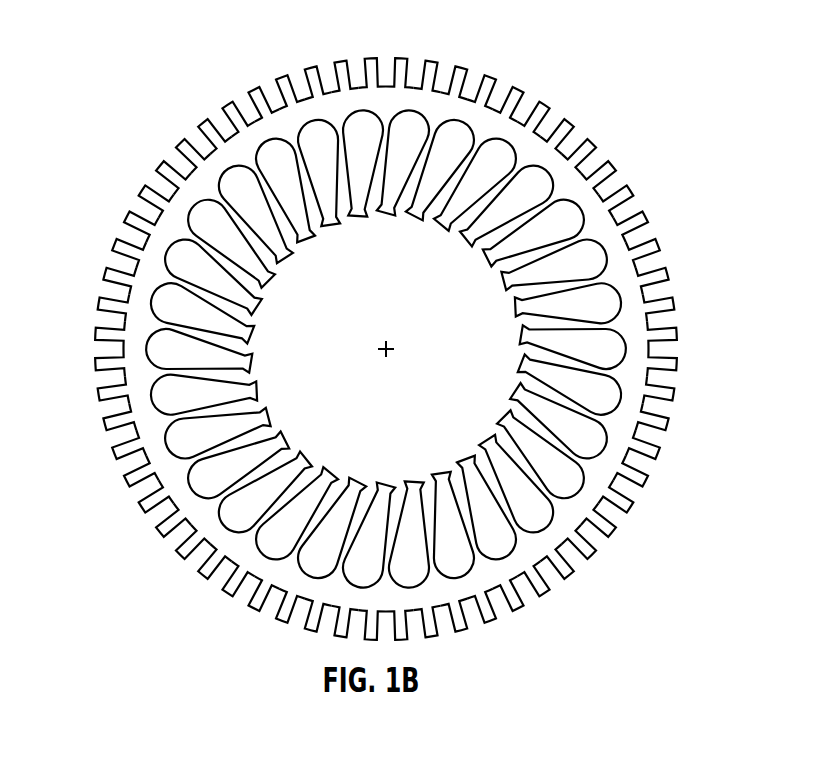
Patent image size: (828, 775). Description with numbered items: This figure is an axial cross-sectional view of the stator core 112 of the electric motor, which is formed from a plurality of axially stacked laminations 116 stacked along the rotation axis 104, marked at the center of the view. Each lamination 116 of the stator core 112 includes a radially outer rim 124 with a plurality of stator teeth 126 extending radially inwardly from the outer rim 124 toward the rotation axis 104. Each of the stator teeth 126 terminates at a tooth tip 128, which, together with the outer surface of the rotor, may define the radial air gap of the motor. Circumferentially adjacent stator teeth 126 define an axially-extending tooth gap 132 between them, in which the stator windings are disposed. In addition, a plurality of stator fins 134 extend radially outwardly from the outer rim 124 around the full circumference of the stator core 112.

The rotation axis 104 is at (392, 345).
The stator core 112 is at (157, 78).
The laminations 116 is at (285, 113).
The radially outer rim 124 is at (513, 135).
The stator teeth 126 is at (298, 165).
The tooth tip 128 is at (262, 418).
The tooth gap 132 is at (190, 268).
The stator fins 134 is at (653, 247).